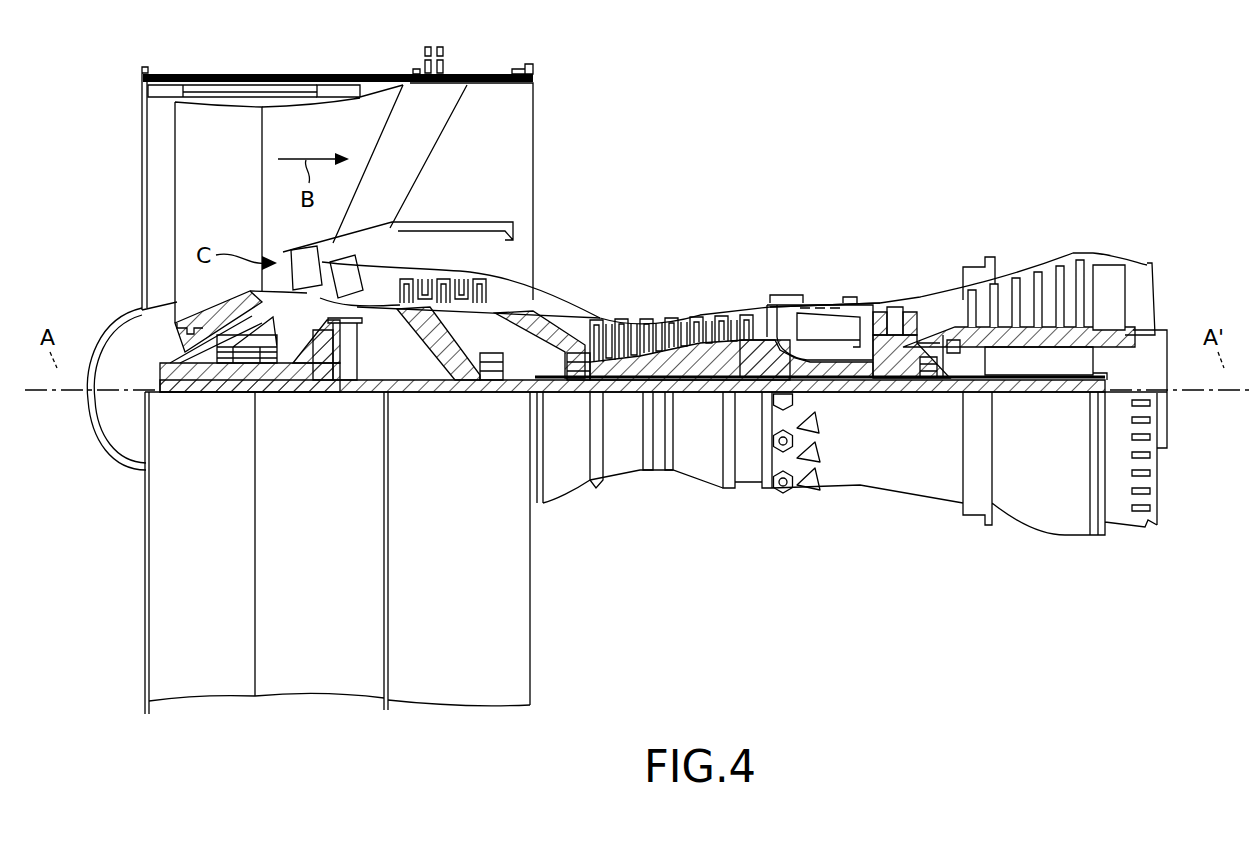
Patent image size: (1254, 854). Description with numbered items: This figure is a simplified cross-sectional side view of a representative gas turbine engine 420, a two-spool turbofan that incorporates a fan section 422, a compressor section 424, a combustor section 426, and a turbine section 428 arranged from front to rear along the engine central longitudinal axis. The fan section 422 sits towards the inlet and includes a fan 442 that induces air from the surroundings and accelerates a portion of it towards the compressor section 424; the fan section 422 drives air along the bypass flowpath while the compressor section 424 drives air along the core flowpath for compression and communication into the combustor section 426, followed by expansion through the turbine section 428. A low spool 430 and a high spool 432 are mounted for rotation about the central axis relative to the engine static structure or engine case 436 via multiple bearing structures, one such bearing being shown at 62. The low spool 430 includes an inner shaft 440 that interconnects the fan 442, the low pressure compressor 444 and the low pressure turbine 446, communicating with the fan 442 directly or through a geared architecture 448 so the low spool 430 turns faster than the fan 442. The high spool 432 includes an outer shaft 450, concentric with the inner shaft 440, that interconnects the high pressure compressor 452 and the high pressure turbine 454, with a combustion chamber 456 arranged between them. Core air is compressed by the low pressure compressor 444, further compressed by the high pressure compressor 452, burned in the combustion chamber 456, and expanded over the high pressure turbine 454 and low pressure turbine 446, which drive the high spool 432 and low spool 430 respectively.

The gas turbine engine 420 is at (883, 108).
The fan section 422 is at (385, 57).
The compressor section 424 is at (393, 190).
The combustor section 426 is at (880, 188).
The turbine section 428 is at (1097, 190).
The low spool 430 is at (706, 425).
The high spool 432 is at (749, 357).
The engine case 436 is at (750, 480).
The inner shaft 440 is at (555, 393).
The fan 442 is at (235, 207).
The low pressure compressor 444 is at (467, 290).
The low pressure turbine 446 is at (1023, 275).
The geared architecture 448 is at (351, 415).
The outer shaft 450 is at (824, 366).
The high pressure compressor 452 is at (703, 320).
The high pressure turbine 454 is at (897, 307).
The combustion chamber 456 is at (820, 331).
The bearing 62 is at (352, 333).